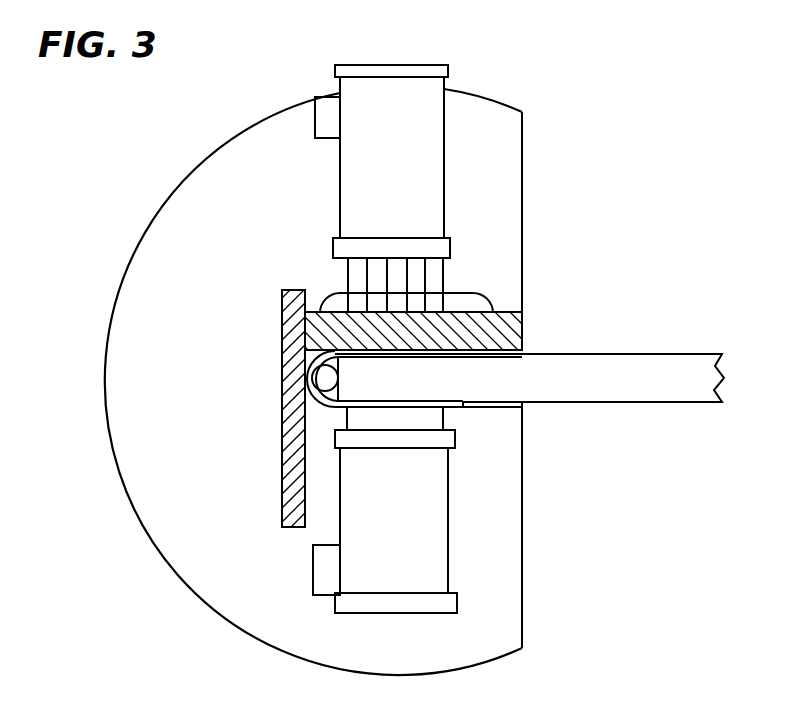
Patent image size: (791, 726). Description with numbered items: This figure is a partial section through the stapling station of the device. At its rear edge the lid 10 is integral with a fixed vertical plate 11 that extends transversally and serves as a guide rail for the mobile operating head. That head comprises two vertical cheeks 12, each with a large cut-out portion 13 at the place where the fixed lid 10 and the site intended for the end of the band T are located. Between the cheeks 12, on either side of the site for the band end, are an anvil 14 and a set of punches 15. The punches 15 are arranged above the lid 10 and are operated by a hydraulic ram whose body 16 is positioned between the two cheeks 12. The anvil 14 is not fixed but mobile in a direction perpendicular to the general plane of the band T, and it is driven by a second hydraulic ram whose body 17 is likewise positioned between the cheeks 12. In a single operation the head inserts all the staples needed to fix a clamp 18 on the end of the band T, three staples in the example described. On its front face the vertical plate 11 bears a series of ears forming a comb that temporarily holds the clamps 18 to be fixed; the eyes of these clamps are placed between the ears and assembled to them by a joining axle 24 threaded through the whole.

The lid 10 is at (512, 328).
The fixed vertical plate 11 is at (283, 335).
The vertical cheeks 12 is at (165, 238).
The cut-out portion 13 is at (498, 401).
The anvil 14 is at (427, 417).
The set of punches 15 is at (398, 272).
The hydraulic ram body 16 is at (423, 133).
The hydraulic ram body 17 is at (418, 545).
The clamp 18 is at (437, 405).
The joining axle 24 is at (325, 378).
The band T is at (650, 370).